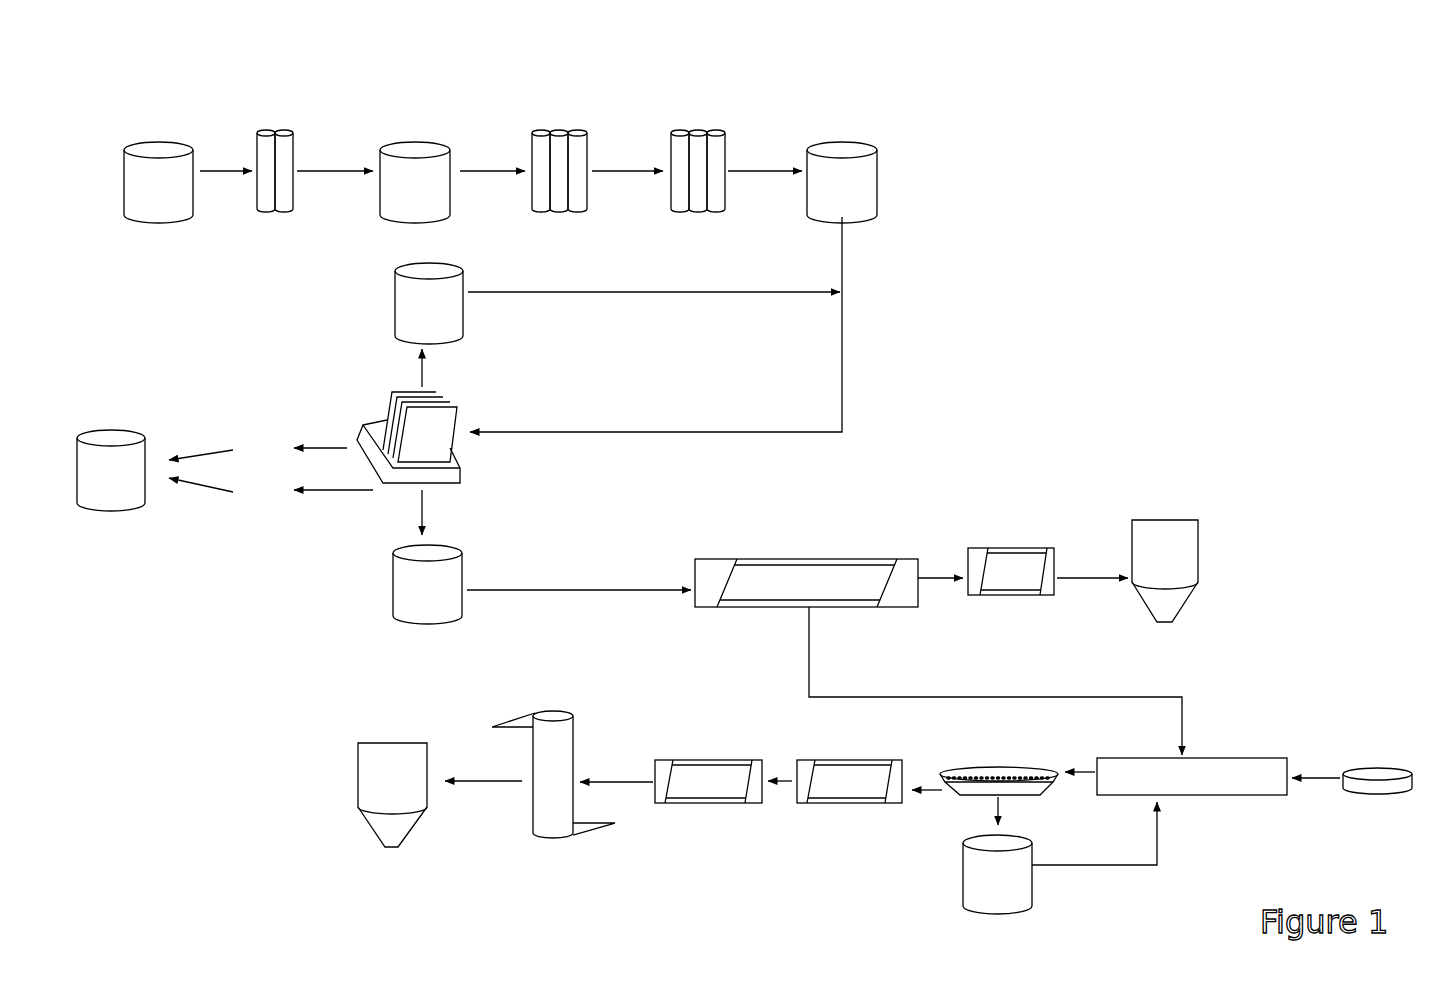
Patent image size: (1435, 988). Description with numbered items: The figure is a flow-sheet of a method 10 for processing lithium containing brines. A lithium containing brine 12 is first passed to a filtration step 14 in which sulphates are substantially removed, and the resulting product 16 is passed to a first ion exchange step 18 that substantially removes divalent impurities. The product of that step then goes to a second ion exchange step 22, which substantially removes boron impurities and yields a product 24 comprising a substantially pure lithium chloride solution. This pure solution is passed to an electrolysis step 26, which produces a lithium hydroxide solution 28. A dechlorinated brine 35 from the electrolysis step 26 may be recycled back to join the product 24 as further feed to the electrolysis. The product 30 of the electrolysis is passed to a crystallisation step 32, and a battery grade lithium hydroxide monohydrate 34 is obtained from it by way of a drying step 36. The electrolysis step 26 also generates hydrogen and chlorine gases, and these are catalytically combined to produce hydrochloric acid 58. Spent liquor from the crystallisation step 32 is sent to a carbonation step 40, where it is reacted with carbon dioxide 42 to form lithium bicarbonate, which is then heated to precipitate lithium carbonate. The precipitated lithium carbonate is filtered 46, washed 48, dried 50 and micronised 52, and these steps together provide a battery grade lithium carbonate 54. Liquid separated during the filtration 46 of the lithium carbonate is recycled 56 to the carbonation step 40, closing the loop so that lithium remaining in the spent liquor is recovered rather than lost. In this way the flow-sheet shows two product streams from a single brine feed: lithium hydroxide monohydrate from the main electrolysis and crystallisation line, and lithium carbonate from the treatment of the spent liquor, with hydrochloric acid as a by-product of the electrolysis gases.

The method 10 is at (1018, 340).
The lithium containing brine 12 is at (153, 140).
The filtration step 14 is at (280, 233).
The product of step (i) 16 is at (387, 217).
The first ion exchange step 18 is at (550, 212).
The second ion exchange step 22 is at (690, 212).
The product of step (iii) 24 is at (877, 175).
The electrolysis step 26 is at (463, 473).
The lithium hydroxide solution 28 is at (423, 620).
The product of step (iv) 30 is at (593, 588).
The crystallisation step 32 is at (747, 607).
The battery grade lithium hydroxide monohydrate 34 is at (1157, 520).
The dechlorinated brine 35 is at (465, 325).
The drying step 36 is at (1013, 548).
The carbonation step 40 is at (1258, 758).
The carbon dioxide 42 is at (1380, 768).
The filtration of lithium carbonate 46 is at (975, 768).
The washing of lithium carbonate 48 is at (848, 803).
The drying of lithium carbonate 50 is at (710, 760).
The micronising of lithium carbonate 52 is at (538, 713).
The battery grade lithium carbonate 54 is at (393, 743).
The recycle of liquid from filtration 56 is at (962, 877).
The hydrochloric acid 58 is at (113, 428).